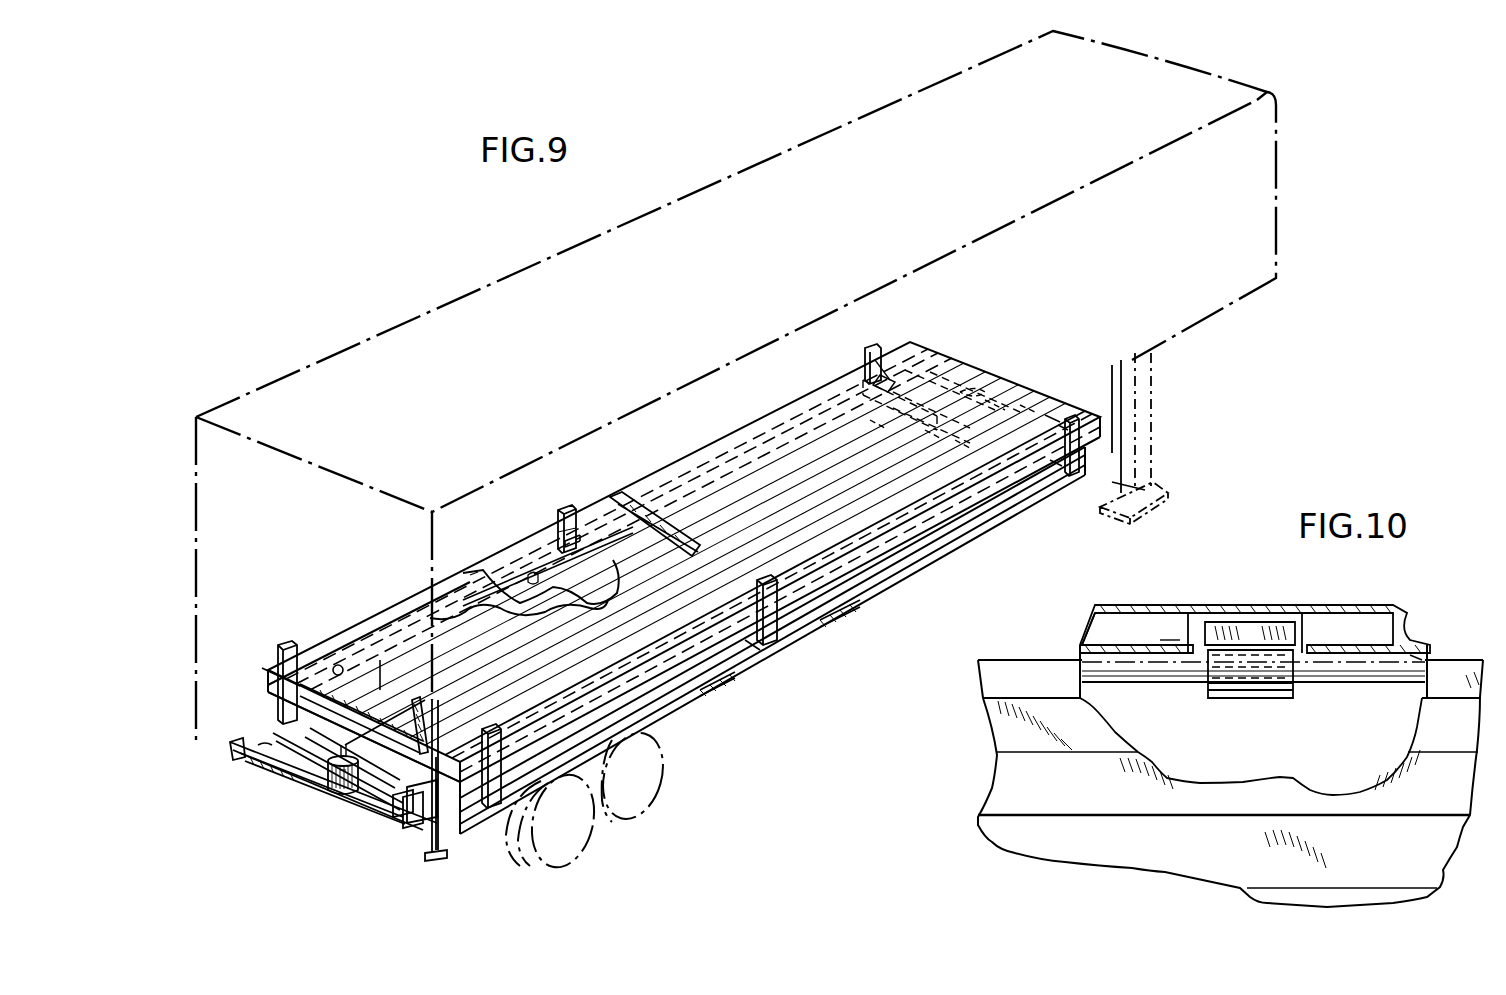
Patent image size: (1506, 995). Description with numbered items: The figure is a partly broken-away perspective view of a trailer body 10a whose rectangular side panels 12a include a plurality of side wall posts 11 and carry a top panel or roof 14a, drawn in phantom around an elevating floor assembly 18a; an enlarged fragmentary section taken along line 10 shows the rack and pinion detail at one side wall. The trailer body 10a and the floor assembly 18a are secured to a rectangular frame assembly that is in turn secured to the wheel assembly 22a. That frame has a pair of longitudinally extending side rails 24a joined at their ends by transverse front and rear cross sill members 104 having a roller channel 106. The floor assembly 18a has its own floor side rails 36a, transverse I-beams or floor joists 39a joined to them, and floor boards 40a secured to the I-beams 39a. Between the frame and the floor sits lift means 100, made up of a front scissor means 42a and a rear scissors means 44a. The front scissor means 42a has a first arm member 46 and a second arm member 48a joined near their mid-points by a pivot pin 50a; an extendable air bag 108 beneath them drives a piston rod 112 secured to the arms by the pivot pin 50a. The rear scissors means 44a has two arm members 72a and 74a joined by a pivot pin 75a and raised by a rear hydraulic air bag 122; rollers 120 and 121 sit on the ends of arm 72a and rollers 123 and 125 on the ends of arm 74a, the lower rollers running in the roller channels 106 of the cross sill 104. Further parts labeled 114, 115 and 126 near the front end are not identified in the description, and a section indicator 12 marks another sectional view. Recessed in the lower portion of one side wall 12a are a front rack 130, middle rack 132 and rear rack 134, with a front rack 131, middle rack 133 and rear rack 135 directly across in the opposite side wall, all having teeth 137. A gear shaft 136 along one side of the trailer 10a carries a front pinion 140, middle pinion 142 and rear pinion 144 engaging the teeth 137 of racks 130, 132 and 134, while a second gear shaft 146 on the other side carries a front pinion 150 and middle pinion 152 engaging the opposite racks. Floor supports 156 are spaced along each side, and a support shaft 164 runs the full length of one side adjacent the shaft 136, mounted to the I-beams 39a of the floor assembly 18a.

In FIG. 9, the trailer body 10a is at (277, 360).
In FIG. 9, the side panel 12a is at (1276, 232).
In FIG. 10, the side panel 12a is at (1378, 616).
In FIG. 9, the top panel or roof 14a is at (753, 190).
In FIG. 9, the floor assembly 18a is at (1110, 434).
In FIG. 9, the wheel assembly 22a is at (594, 863).
In FIG. 9, the side rail 24a is at (618, 745).
In FIG. 9, the floor side rail 36a is at (897, 542).
In FIG. 9, the I-beam or floor joist 39a is at (664, 553).
In FIG. 9, the floor board 40a is at (745, 495).
In FIG. 10, the floor board 40a is at (1452, 715).
In FIG. 9, the front scissor means 42a is at (348, 798).
In FIG. 9, the rear scissors means 44a is at (1055, 412).
In FIG. 9, the first arm member 46 is at (338, 664).
In FIG. 9, the second arm member 48a is at (292, 772).
In FIG. 9, the pivot pin 50a is at (322, 790).
In FIG. 9, the arm member 72a is at (975, 390).
In FIG. 9, the arm member 74a is at (871, 436).
In FIG. 9, the pivot pin 75a is at (998, 400).
In FIG. 9, the lift means 100 is at (857, 560).
In FIG. 9, the frame cross sill member 104 is at (362, 800).
In FIG. 9, the roller channel 106 is at (238, 746).
In FIG. 9, the extendable fluid or air bag 108 is at (340, 806).
In FIG. 9, the piston rod 112 is at (322, 800).
In FIG. 9, the lever 114 is at (270, 710).
In FIG. 9, the pivot pin 115 is at (232, 747).
In FIG. 9, the roller 120 is at (935, 372).
In FIG. 9, the roller 121 is at (1058, 468).
In FIG. 9, the rear lift means or hydraulic air bag 122 is at (1030, 402).
In FIG. 9, the roller 123 is at (1066, 425).
In FIG. 9, the roller 125 is at (933, 440).
In FIG. 9, the guide rail 126 is at (960, 452).
In FIG. 9, the front rack 130 is at (288, 643).
In FIG. 9, the front rack 131 is at (492, 810).
In FIG. 9, the middle rack 132 is at (572, 570).
In FIG. 10, the middle rack 132 is at (1228, 625).
In FIG. 9, the middle rack 133 is at (772, 648).
In FIG. 9, the rear rack 134 is at (862, 340).
In FIG. 9, the rear rack 135 is at (1073, 478).
In FIG. 9, the gear shaft 136 is at (480, 574).
In FIG. 10, the gear shaft 136 is at (1413, 660).
In FIG. 9, the teeth 137 is at (587, 500).
In FIG. 10, the teeth 137 is at (1302, 648).
In FIG. 9, the front gear or pinion 140 is at (274, 650).
In FIG. 10, the middle gear or pinion 142 is at (1170, 640).
In FIG. 9, the rear gear or pinion 144 is at (882, 380).
In FIG. 9, the gear shaft 146 is at (804, 586).
In FIG. 9, the front gear or pinion 150 is at (441, 818).
In FIG. 9, the middle gear or pinion 152 is at (755, 640).
In FIG. 9, the floor support 156 is at (521, 592).
In FIG. 9, the support shaft 164 is at (382, 652).
In FIG. 9, the section line 10— 10 is at (595, 462).
In FIG. 9, the side wall post 11 is at (740, 593).
In FIG. 9, the section line 12 is at (263, 647).